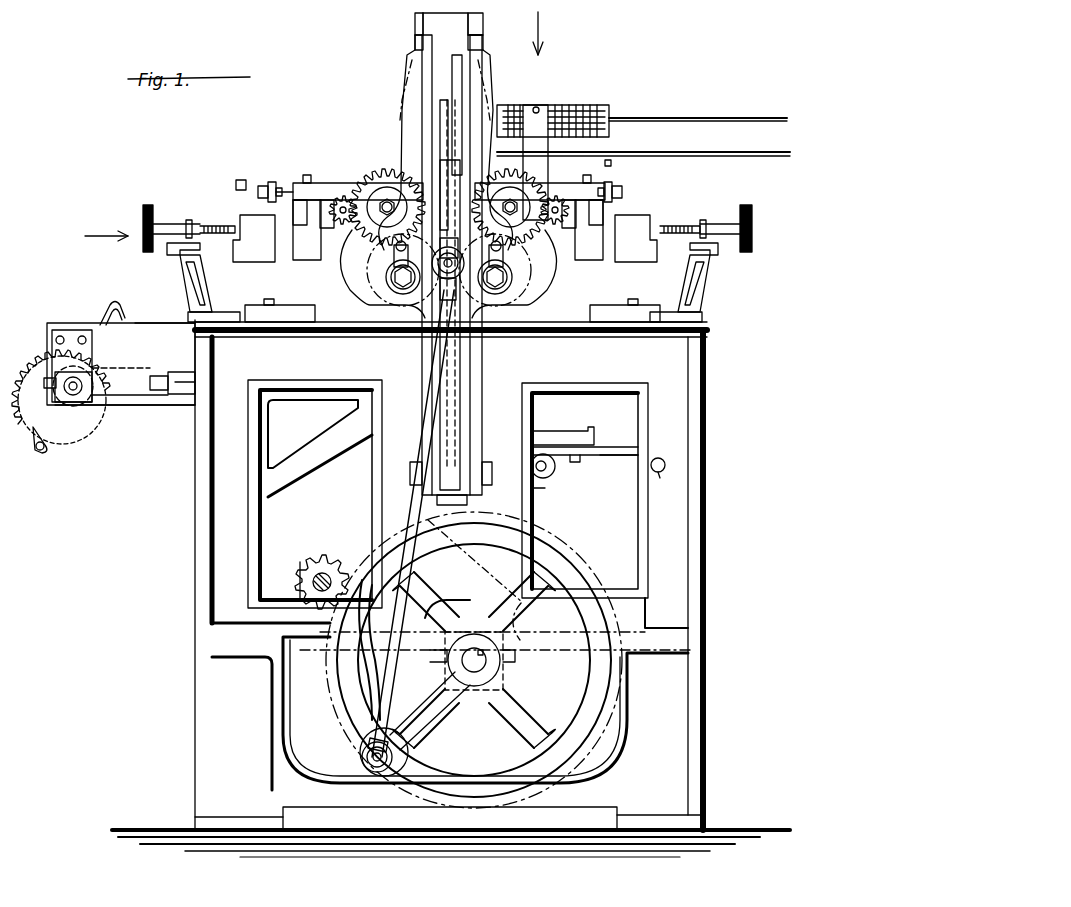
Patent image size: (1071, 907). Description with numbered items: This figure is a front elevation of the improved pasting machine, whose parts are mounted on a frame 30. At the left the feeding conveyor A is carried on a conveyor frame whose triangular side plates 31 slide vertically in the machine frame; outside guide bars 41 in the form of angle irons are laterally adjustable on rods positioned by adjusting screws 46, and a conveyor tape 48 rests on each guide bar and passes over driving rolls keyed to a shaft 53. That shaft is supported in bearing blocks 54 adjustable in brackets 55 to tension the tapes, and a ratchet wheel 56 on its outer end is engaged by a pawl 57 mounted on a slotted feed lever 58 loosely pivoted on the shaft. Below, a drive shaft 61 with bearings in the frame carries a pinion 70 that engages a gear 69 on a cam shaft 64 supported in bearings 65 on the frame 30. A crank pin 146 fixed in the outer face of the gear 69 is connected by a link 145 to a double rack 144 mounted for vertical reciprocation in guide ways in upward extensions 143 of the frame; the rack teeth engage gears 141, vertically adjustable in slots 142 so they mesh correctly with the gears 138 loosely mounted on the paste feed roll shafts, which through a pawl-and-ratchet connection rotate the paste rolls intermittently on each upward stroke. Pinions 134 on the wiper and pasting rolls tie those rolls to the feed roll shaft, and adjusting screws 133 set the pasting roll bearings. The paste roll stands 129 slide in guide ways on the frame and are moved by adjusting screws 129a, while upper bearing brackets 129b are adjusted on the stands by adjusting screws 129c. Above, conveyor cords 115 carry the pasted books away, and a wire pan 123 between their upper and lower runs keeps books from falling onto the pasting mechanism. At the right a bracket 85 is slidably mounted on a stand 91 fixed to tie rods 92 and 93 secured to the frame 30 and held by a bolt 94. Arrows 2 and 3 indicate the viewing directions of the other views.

The section line arrow 2 is at (543, 33).
The section line arrow 3 is at (110, 232).
The frame 30 is at (200, 576).
The side plates 31 is at (308, 448).
The guide bars 41 is at (170, 326).
The adjusting screws 46 is at (130, 385).
The conveyor tape 48 is at (125, 409).
The shaft 53 is at (72, 395).
The bearing blocks 54 is at (55, 383).
The brackets 55 is at (92, 347).
The ratchet wheel 56 is at (45, 372).
The pawl 57 is at (32, 438).
The feed lever 58 is at (123, 309).
The drive shaft 61 is at (310, 565).
The shaft 64 is at (474, 672).
The bearings 65 is at (500, 668).
The gear 69 is at (345, 562).
The pinion 70 is at (305, 582).
The bracket 85 is at (590, 430).
The stand 91 is at (626, 455).
The tie rod 92 is at (546, 476).
The tie rod 93 is at (664, 477).
The bolt 94 is at (584, 468).
The cords 115 is at (695, 120).
The wire pan 123 is at (596, 108).
The stand 129 is at (240, 287).
The adjusting screws 129a is at (148, 205).
The upper bearing brackets 129b is at (333, 185).
The adjusting screws 129c is at (640, 188).
The adjusting screws 133 is at (290, 220).
The pinions 134 is at (333, 222).
The gear 138 is at (372, 232).
The gears 141 is at (378, 278).
The slots 142 is at (395, 262).
The upward extensions 143 is at (418, 80).
The double rack 144 is at (447, 178).
The link 145 is at (462, 584).
The crank pin 146 is at (362, 757).
The feeding conveyor A is at (88, 320).